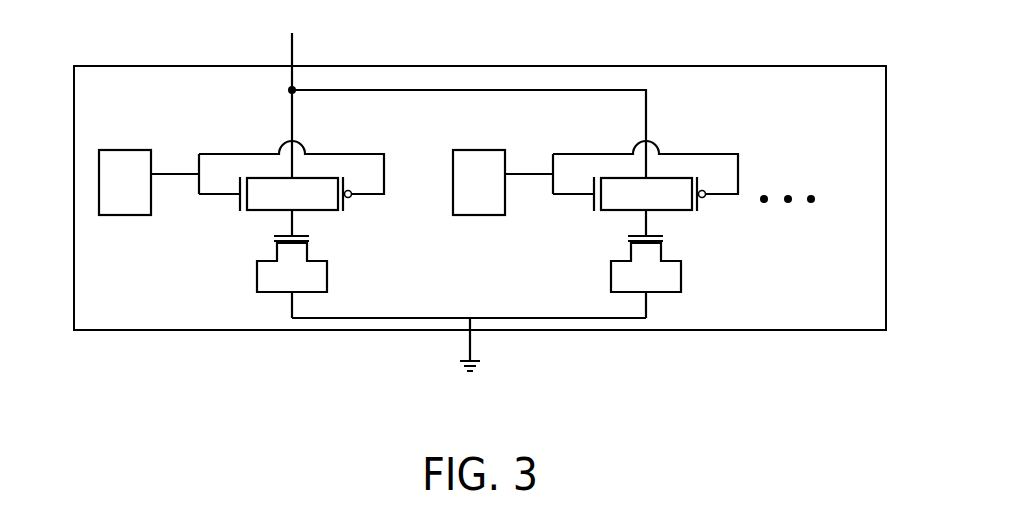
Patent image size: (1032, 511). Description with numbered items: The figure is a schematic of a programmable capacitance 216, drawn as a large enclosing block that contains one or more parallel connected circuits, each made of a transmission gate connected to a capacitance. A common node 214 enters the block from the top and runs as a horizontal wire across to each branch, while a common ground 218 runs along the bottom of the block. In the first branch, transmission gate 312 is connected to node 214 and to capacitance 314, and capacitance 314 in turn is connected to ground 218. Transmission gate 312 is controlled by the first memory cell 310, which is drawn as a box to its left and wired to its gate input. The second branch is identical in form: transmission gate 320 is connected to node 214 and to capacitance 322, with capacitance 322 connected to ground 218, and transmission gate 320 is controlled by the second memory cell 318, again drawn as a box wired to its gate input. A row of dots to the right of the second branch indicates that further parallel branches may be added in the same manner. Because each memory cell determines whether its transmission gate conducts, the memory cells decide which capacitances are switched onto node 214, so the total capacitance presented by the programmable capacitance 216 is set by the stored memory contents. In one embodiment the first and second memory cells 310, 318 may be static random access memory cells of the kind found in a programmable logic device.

The node 214 is at (293, 48).
The programmable capacitance 216 is at (823, 66).
The ground 218 is at (473, 346).
The memory cell M1 310 is at (128, 150).
The transmission gate 312 is at (311, 204).
The capacitance 314 is at (293, 245).
The memory cell M2 318 is at (484, 150).
The transmission gate 320 is at (665, 204).
The capacitance 322 is at (647, 245).